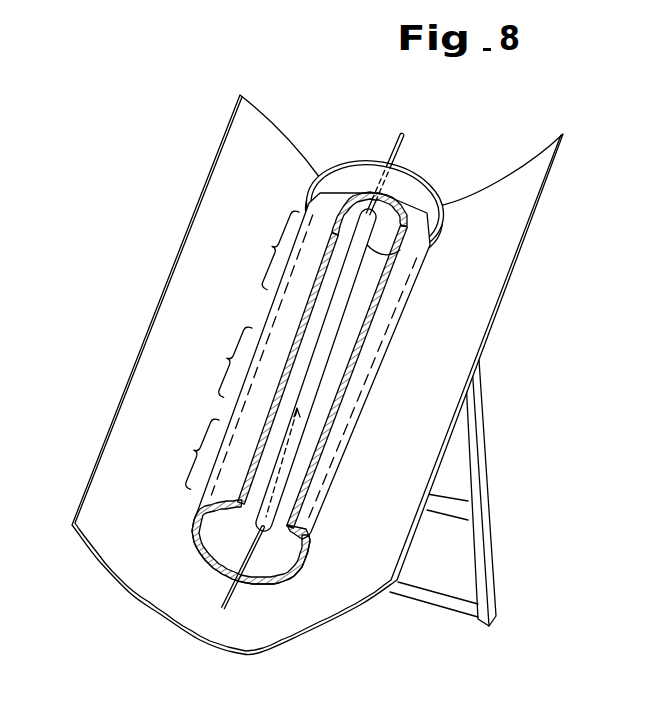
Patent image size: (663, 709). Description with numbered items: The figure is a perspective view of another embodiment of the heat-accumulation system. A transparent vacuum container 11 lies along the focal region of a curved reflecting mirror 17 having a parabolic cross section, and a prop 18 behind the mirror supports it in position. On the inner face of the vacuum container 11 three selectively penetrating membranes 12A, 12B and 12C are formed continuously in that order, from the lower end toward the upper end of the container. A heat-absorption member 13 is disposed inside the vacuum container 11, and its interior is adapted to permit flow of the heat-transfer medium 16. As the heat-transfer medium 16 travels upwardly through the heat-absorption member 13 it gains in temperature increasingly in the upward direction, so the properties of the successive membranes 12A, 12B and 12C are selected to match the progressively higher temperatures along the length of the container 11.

The transparent vacuum container 11 is at (403, 302).
The selectively penetrating membrane 12A is at (184, 453).
The selectively penetrating membrane 12B is at (219, 361).
The selectively penetrating membrane 12C is at (266, 249).
The heat-absorption member 13 is at (328, 342).
The heat-transfer medium 16 is at (290, 437).
The curved reflecting mirror 17 is at (263, 163).
The prop 18 is at (488, 500).